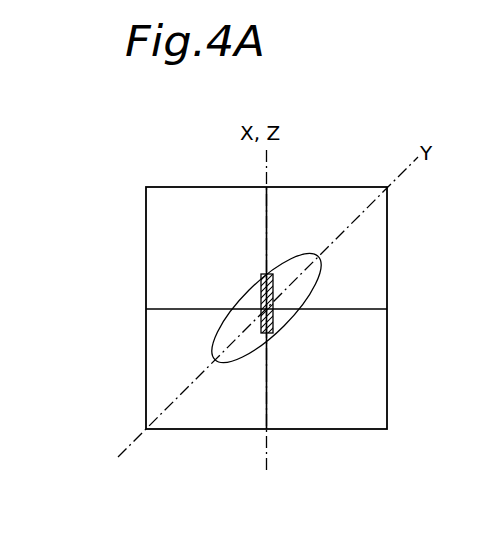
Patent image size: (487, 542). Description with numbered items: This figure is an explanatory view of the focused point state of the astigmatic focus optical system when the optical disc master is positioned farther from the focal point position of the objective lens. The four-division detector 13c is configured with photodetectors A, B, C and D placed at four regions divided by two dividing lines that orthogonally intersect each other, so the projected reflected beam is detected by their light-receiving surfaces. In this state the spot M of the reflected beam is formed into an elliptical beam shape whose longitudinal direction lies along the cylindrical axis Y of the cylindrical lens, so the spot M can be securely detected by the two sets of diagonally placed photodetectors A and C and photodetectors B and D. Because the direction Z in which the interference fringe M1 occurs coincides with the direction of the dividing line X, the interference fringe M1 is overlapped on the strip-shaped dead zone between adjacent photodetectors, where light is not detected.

The 4-division detector 13c is at (178, 189).
The spot M is at (313, 283).
The interference fringe M1 is at (256, 295).